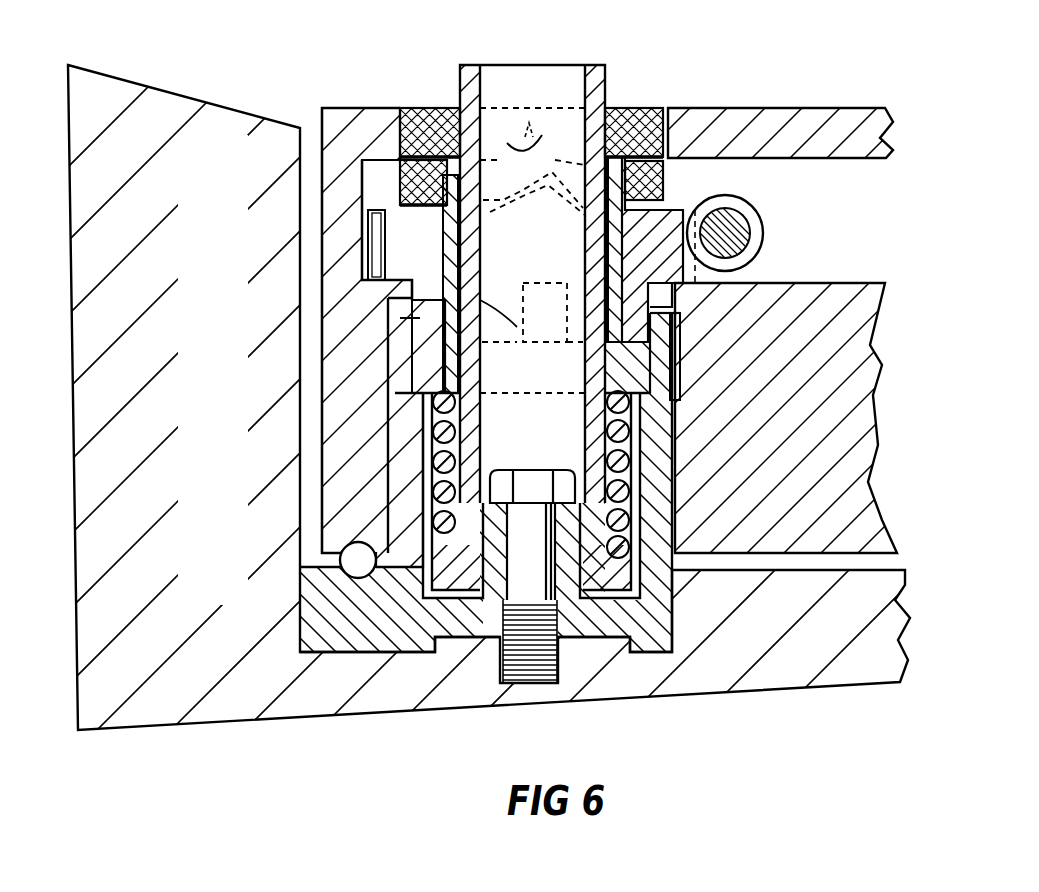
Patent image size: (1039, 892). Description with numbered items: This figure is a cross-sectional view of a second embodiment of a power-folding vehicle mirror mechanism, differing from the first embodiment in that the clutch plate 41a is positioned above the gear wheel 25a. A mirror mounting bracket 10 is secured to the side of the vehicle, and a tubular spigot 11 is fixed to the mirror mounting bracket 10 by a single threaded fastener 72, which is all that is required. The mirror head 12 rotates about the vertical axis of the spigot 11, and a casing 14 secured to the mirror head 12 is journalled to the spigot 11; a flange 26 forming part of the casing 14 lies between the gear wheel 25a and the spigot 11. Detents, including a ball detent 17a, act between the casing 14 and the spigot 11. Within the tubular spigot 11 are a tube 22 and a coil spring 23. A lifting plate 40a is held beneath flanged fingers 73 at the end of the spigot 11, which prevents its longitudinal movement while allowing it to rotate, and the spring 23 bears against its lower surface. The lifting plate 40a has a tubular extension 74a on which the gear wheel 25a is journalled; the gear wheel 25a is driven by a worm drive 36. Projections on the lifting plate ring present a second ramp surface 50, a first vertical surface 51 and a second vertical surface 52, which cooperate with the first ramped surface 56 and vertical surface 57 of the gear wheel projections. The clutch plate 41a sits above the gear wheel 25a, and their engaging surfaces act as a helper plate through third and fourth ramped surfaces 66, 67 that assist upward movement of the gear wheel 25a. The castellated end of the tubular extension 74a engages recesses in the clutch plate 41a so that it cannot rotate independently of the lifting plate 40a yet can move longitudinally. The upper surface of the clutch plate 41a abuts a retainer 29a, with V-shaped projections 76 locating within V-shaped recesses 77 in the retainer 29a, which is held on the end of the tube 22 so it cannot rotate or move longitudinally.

The mirror mounting bracket 10 is at (760, 660).
The spigot 11 is at (343, 543).
The mirror head 12 is at (843, 502).
The casing 14 is at (352, 455).
The ball 17a is at (358, 565).
The tube 22 is at (600, 78).
The coil spring 23 is at (397, 508).
The gear wheel 25a is at (385, 248).
The flange 26 is at (420, 318).
The retainer 29a is at (428, 110).
The worm drive 36 is at (728, 233).
The lifting plate 40a is at (672, 352).
The clutch plate 41a is at (665, 180).
The second ramp surface 50 is at (478, 372).
The first vertical surface 51 is at (540, 342).
The second vertical surface 52 is at (560, 345).
The first ramped surface 56 is at (470, 292).
The vertical surface 57 is at (527, 300).
The third ramped surface 66 is at (507, 143).
The fourth ramped surface 67 is at (445, 222).
The threaded fastener 72 is at (560, 657).
The flanged fingers 73 is at (405, 358).
The tubular extension 74a is at (520, 195).
The V-shaped projections 76 is at (542, 135).
The V-shaped recesses 77 is at (524, 188).